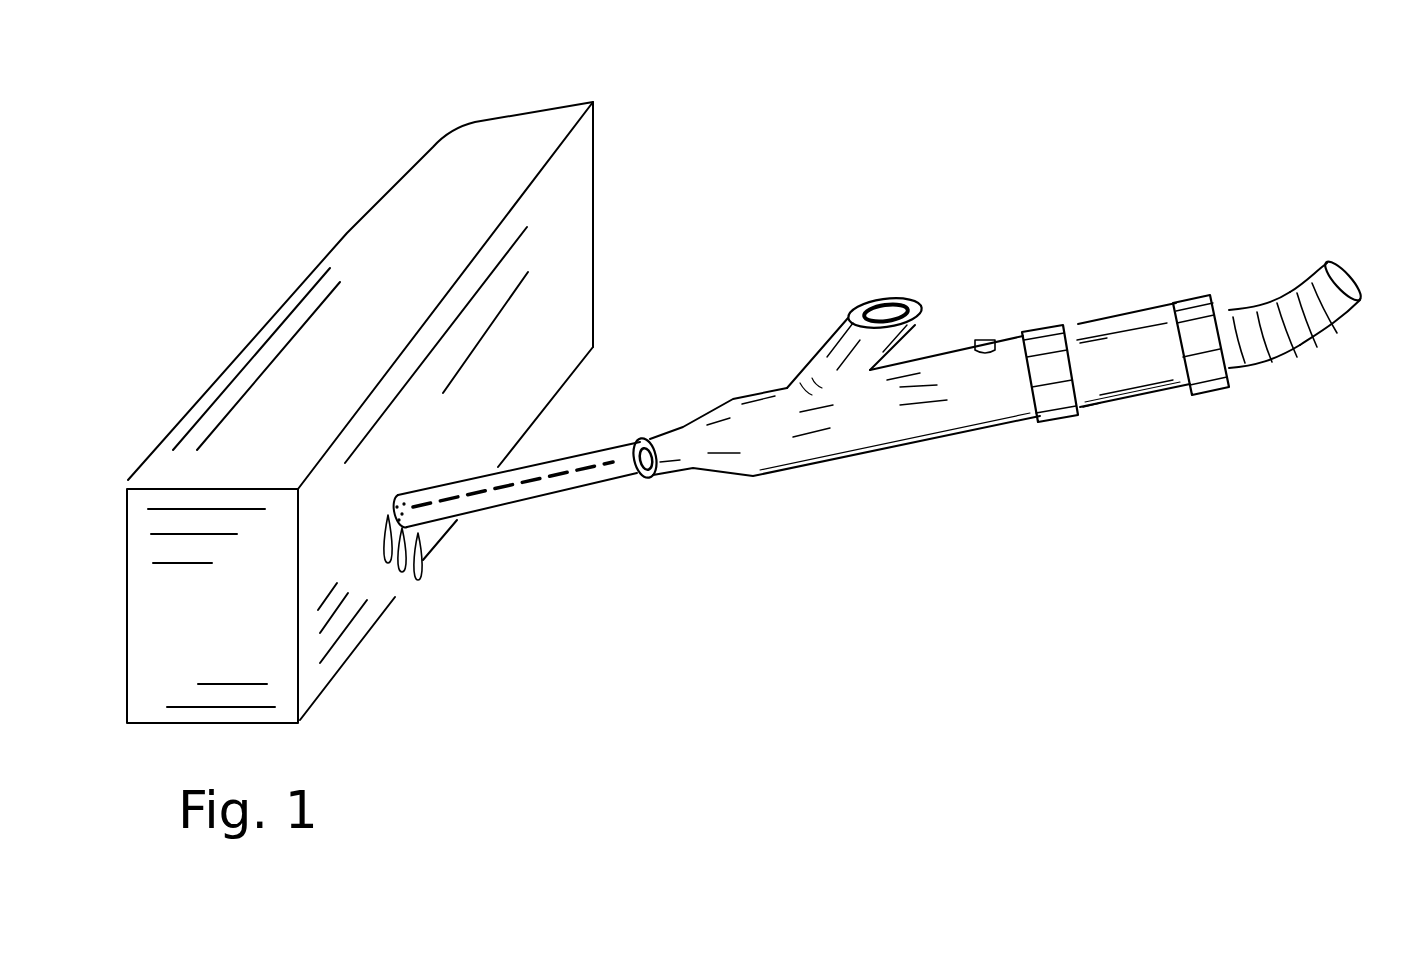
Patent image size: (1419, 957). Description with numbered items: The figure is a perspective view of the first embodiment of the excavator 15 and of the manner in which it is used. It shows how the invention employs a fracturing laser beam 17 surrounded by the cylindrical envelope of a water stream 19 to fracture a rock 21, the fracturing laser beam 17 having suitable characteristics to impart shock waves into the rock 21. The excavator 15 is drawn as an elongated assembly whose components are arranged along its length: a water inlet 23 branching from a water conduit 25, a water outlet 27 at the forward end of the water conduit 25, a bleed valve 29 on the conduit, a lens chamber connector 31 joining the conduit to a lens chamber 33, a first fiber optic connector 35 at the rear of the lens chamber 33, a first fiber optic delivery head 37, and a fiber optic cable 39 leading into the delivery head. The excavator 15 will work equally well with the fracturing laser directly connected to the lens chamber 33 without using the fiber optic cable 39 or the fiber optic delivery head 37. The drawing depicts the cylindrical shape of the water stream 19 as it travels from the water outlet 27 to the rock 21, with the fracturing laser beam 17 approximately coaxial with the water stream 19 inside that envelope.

The excavator 15 is at (982, 192).
The fracturing laser beam 17 is at (537, 477).
The water stream 19 is at (480, 517).
The rock 21 is at (437, 207).
The water inlet 23 is at (887, 315).
The water conduit 25 is at (763, 433).
The water outlet 27 is at (640, 478).
The bleed valve 29 is at (978, 332).
The lens chamber connector 31 is at (1060, 432).
The lens chamber 33 is at (1142, 417).
The first fiber optic connector 35 is at (1187, 285).
The first fiber optic delivery head 37 is at (1237, 378).
The fiber optic cable 39 is at (1312, 352).